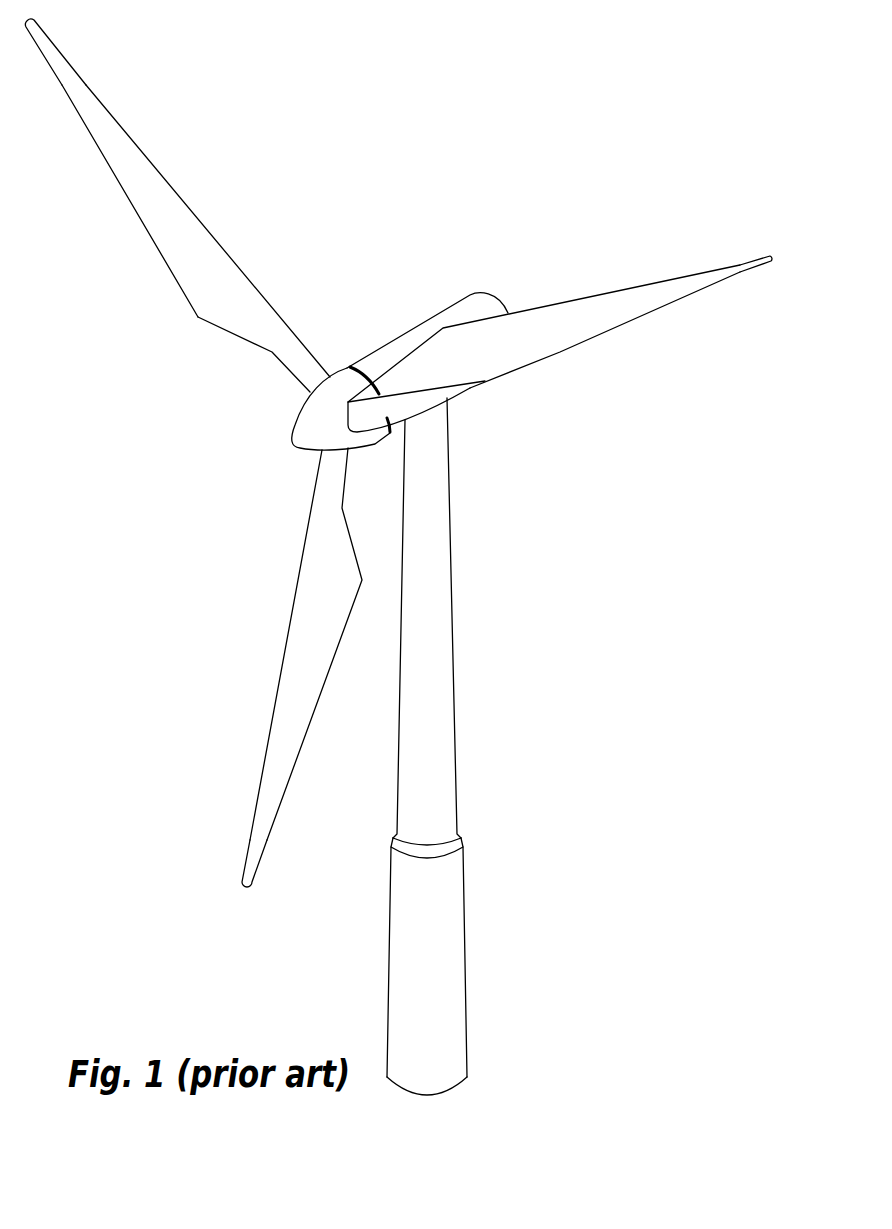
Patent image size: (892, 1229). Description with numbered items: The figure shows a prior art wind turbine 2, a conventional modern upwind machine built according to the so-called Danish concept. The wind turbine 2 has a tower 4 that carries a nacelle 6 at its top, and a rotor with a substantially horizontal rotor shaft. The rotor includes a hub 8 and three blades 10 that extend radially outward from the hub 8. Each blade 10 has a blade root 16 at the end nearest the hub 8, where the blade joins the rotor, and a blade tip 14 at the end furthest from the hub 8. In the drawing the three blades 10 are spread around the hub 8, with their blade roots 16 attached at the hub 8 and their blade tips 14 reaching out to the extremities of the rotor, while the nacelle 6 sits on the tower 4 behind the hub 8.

The wind turbine 2 is at (540, 693).
The tower 4 is at (443, 622).
The nacelle 6 is at (393, 350).
The hub 8 is at (316, 430).
The blade 10 is at (208, 291).
The blade tip 14 is at (66, 72).
The blade root 16 is at (315, 385).